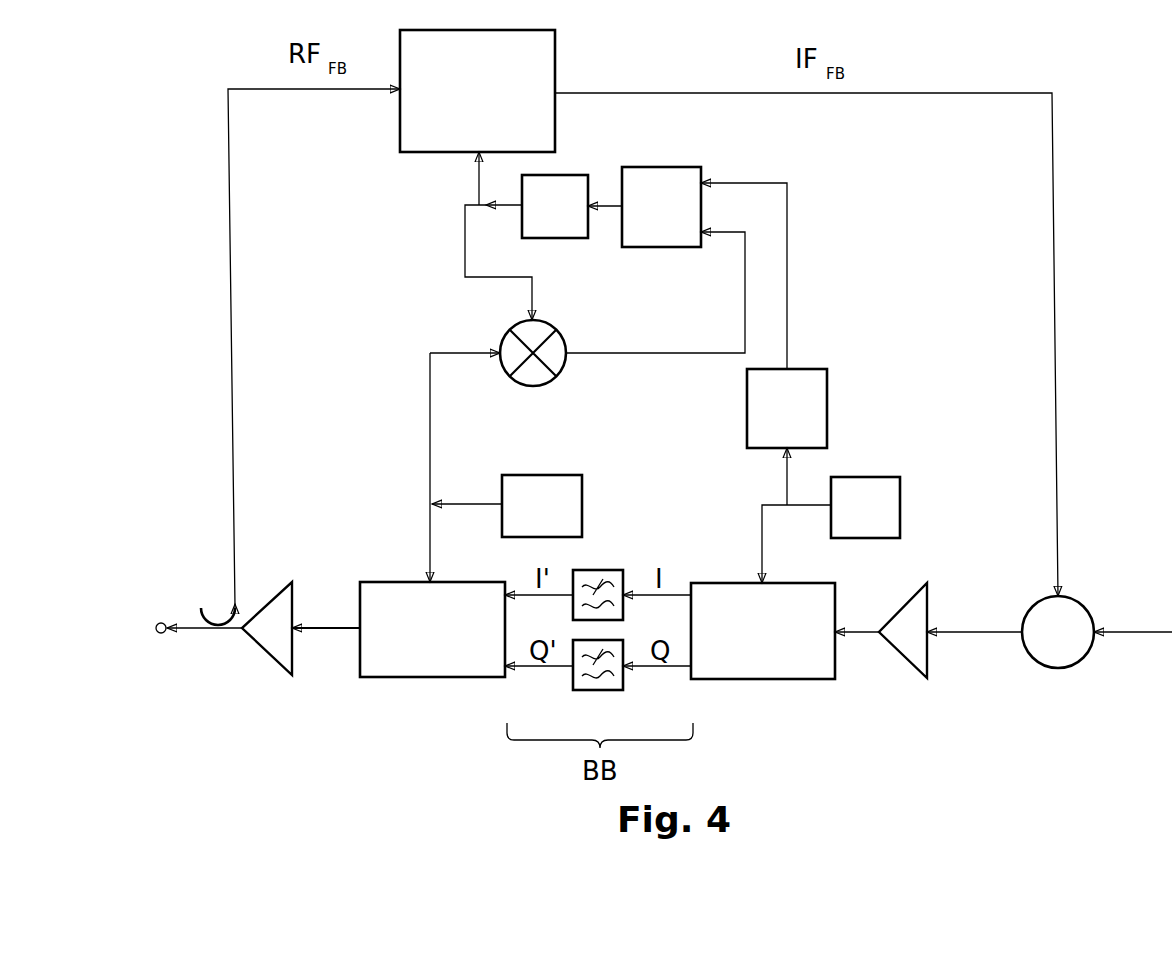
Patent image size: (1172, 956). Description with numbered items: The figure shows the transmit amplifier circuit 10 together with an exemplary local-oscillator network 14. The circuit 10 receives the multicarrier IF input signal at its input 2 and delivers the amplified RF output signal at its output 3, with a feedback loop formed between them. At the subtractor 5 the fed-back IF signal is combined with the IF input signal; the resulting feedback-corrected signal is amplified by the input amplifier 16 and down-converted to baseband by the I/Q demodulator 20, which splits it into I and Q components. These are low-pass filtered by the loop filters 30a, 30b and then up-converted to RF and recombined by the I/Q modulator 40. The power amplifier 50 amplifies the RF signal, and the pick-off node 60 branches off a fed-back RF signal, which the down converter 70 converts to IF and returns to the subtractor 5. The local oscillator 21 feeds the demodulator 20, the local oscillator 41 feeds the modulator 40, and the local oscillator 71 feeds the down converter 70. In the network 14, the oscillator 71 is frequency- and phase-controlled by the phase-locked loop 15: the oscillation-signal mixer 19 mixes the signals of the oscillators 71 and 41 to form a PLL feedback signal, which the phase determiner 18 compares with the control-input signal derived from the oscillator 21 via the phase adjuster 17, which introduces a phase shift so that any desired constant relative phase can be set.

The input 2 is at (1168, 632).
The output 3 is at (161, 622).
The subtractor 5 is at (1058, 668).
The transmit amplifier circuit 10 is at (1112, 222).
The local-oscillator network 14 is at (917, 247).
The phase-locked loop 15 is at (448, 258).
The input amplifier 16 is at (927, 678).
The phase adjuster 17 is at (827, 408).
The phase determiner 18 is at (660, 248).
The oscillation-signal mixer 19 is at (557, 377).
The I/Q demodulator 20 is at (763, 682).
The local oscillator 21 is at (900, 508).
The loop filter 30a is at (628, 572).
The loop filter 30b is at (623, 688).
The I/Q modulator 40 is at (433, 678).
The local oscillator 41 is at (582, 500).
The power amplifier 50 is at (290, 677).
The pick-off node 60 is at (218, 612).
The down converter 70 is at (400, 126).
The local oscillator 71 is at (590, 180).